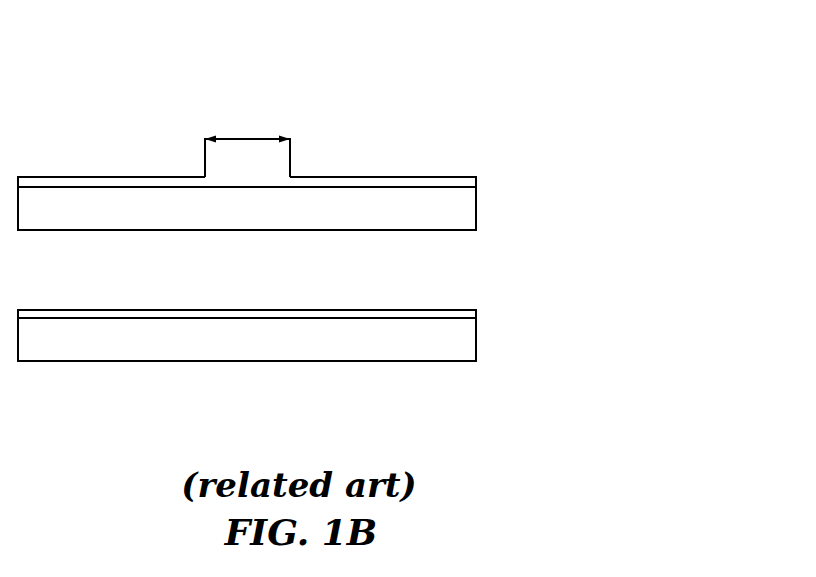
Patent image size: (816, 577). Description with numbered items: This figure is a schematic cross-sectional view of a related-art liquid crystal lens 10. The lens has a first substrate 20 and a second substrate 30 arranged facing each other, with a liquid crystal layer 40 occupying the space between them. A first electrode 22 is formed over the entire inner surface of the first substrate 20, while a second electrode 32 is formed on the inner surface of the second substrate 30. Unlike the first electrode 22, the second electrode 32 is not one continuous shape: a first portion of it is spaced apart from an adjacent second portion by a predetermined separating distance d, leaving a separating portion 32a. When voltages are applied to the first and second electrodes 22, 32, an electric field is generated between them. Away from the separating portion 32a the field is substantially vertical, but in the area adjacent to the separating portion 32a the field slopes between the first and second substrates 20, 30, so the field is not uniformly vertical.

The liquid crystal lens 10 is at (459, 126).
The first substrate 20 is at (422, 354).
The first electrode 22 is at (476, 315).
The second substrate 30 is at (470, 208).
The second electrode 32 is at (53, 183).
The separating portion 32a is at (284, 164).
The liquid crystal layer 40 is at (490, 232).